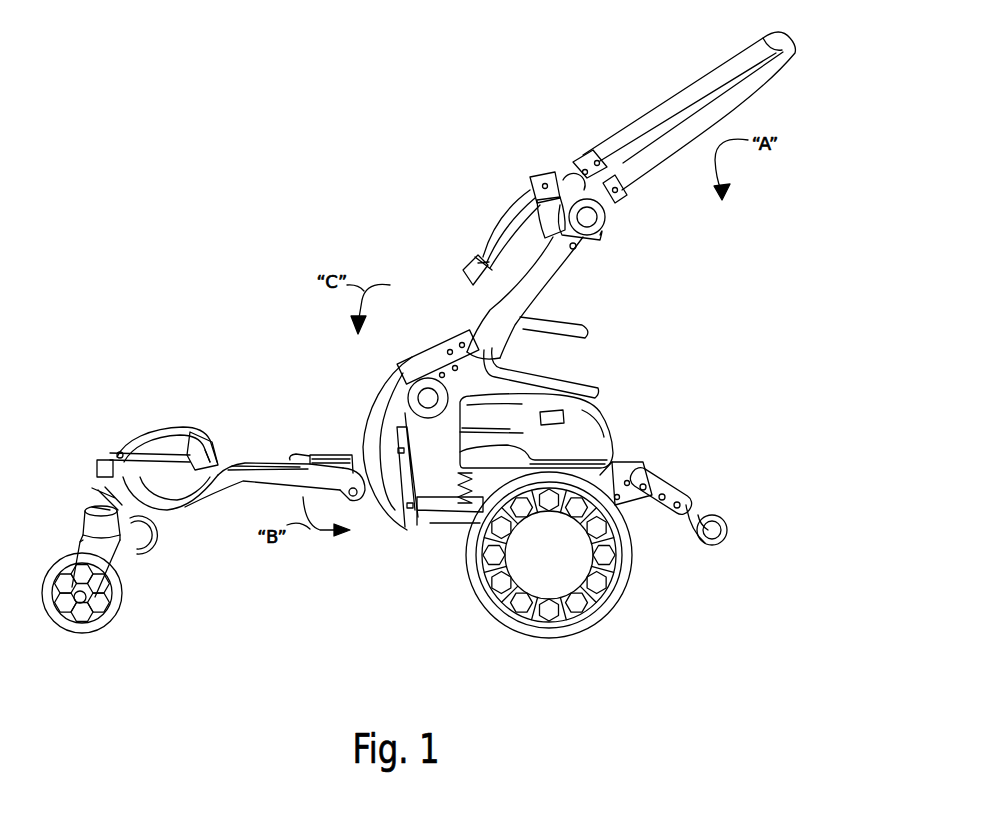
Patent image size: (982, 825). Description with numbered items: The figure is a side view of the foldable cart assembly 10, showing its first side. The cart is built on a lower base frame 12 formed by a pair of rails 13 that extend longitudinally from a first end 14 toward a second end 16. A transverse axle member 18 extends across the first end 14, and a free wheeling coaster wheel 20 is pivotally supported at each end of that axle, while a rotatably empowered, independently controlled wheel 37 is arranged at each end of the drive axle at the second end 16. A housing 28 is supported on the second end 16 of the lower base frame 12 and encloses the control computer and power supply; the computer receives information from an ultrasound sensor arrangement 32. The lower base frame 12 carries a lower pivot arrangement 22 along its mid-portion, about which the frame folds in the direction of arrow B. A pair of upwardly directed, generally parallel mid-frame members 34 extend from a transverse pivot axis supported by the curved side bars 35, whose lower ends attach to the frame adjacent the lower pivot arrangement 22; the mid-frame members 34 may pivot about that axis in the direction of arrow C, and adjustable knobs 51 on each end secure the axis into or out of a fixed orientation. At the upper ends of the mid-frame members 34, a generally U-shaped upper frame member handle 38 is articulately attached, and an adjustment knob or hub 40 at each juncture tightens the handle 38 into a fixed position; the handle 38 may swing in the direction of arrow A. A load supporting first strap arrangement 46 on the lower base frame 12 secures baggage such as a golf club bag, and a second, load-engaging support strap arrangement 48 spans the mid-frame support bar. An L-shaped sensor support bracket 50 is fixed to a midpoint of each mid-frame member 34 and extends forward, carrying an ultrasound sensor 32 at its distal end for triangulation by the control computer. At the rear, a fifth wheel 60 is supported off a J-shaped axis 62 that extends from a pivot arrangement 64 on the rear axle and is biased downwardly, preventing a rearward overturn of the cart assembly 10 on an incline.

The foldable cart assembly 10 is at (325, 254).
The lower base frame 12 is at (280, 464).
The rails 13 is at (243, 461).
The first end 14 is at (110, 497).
The second end 16 is at (571, 424).
The transverse axle member 18 is at (118, 500).
The free wheeling coaster wheel 20 is at (128, 598).
The lower pivot arrangement 22 is at (327, 455).
The housing 28 is at (587, 418).
The ultrasound sensor arrangement 32 is at (572, 347).
The mid-frame members 34 is at (510, 330).
The curved side bars 35 is at (393, 523).
The independently controlled wheel 37 is at (627, 583).
The upper frame member handle 38 is at (655, 103).
The adjustment knob or hub 40 is at (563, 167).
The first strap arrangement 46 is at (144, 422).
The second support strap arrangement 48 is at (483, 220).
The L-shaped sensor support bracket 50 is at (568, 325).
The adjustable knob 51 is at (412, 383).
The fifth wheel 60 is at (717, 518).
The J-shaped axis 62 is at (693, 512).
The pivot arrangement 64 is at (643, 464).